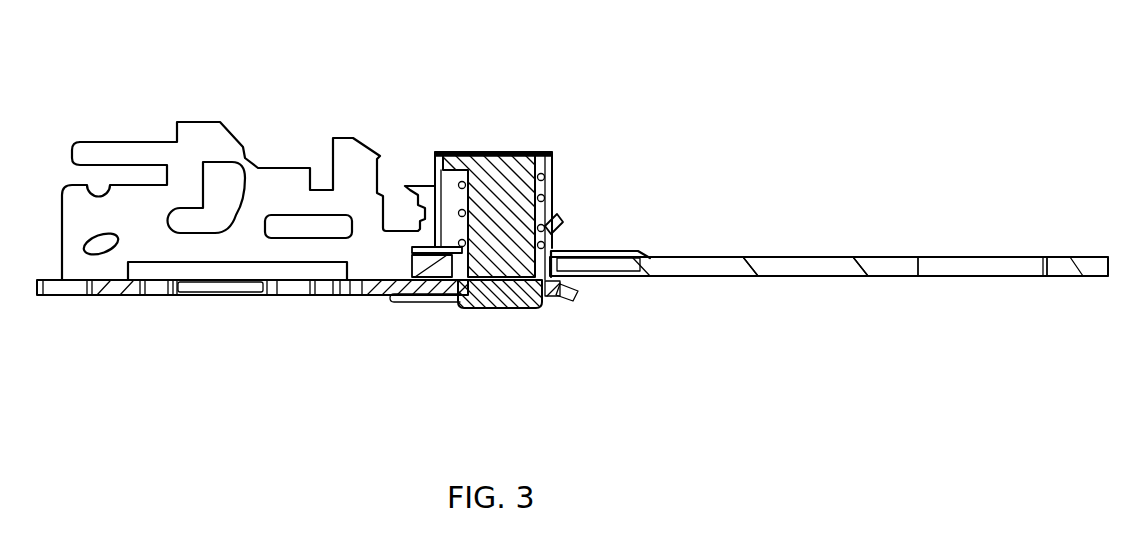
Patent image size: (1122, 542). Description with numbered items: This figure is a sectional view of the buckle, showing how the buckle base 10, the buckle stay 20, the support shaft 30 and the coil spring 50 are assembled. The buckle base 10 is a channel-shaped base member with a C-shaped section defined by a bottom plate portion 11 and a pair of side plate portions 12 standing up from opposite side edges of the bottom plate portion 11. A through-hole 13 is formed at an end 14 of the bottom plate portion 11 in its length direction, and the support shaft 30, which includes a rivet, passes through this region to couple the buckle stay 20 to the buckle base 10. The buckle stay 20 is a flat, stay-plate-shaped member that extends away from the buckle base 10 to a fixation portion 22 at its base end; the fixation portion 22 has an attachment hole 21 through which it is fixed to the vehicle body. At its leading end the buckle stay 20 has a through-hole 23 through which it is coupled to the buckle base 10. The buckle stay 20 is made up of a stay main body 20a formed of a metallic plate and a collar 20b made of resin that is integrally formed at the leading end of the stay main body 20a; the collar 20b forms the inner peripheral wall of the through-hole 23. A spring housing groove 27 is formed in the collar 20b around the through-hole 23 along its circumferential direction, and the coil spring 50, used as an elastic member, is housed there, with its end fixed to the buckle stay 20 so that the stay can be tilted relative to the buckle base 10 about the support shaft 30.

The buckle base 10 is at (101, 139).
The bottom plate portion 11 is at (115, 296).
The side plate portion 12 is at (190, 175).
The through-hole 13 is at (492, 308).
The end 14 is at (458, 308).
The buckle stay 20 is at (857, 252).
The stay main body 20a is at (793, 262).
The collar 20b is at (625, 250).
The attachment hole 21 is at (1043, 268).
The fixation portion 22 is at (1077, 262).
The through-hole 23 is at (522, 278).
The spring housing groove 27 is at (442, 247).
The support shaft 30 is at (503, 180).
The coil spring 50 is at (553, 178).